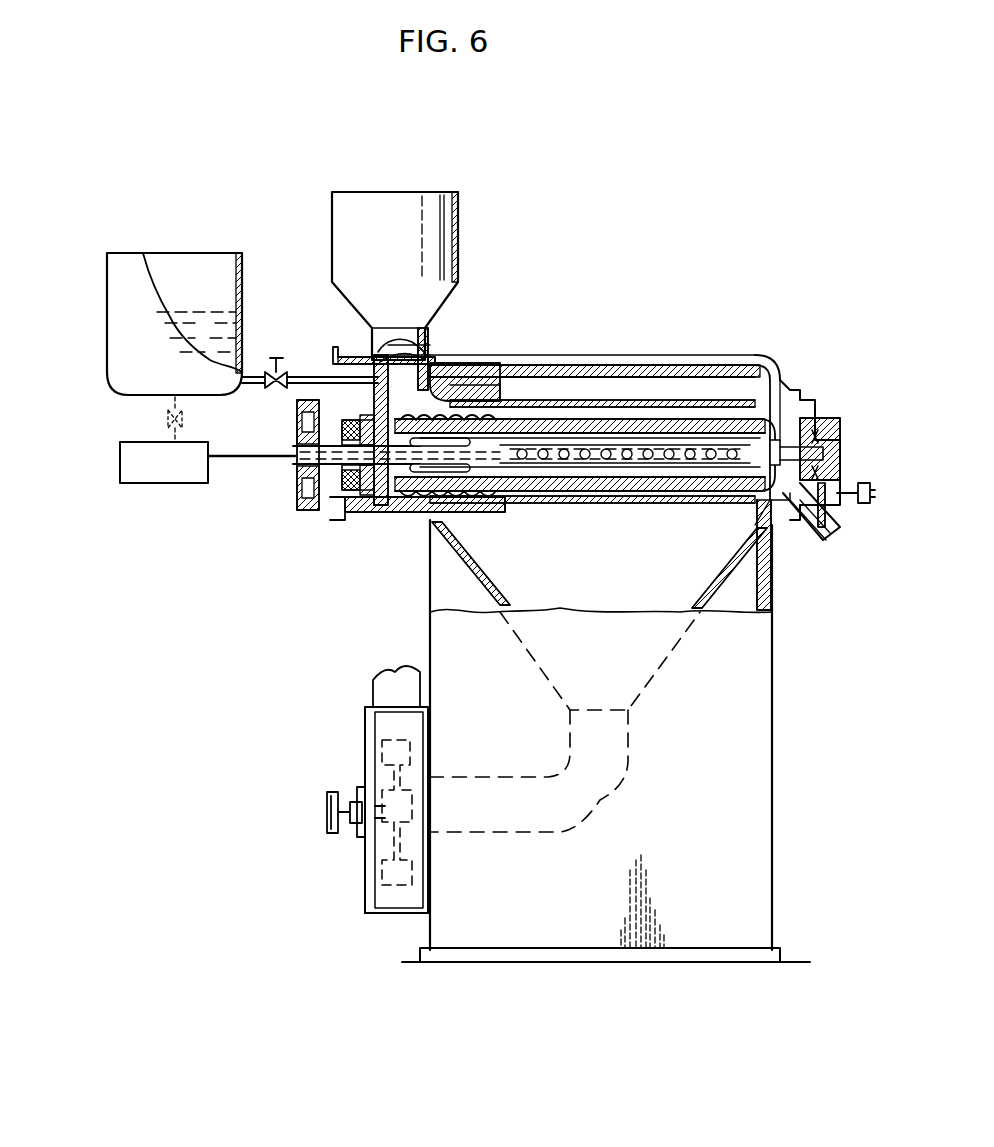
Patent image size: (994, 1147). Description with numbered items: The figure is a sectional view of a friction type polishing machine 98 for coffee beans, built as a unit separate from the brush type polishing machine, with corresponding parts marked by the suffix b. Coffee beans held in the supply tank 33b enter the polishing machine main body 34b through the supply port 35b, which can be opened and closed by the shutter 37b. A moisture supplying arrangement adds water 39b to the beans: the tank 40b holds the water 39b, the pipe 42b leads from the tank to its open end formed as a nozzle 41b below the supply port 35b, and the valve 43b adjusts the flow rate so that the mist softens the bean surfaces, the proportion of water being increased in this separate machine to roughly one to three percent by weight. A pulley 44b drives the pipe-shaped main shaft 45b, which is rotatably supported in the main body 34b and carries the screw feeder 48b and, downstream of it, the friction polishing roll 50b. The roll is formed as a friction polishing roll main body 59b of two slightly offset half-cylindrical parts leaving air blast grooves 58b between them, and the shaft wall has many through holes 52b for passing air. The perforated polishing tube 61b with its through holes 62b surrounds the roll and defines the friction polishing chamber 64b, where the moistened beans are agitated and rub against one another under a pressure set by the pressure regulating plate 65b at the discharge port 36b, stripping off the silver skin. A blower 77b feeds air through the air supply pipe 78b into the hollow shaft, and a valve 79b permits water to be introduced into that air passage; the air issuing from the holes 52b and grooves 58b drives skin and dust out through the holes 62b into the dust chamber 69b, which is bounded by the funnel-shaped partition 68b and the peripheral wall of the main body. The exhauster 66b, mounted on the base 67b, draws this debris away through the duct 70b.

The friction type polishing machine 98 is at (578, 258).
The supply tank 33b is at (392, 202).
The polishing machine main body 34b is at (367, 507).
The supply port 35b is at (418, 345).
The discharge port 36b is at (803, 523).
The shutter 37b is at (335, 347).
The water 39b is at (186, 317).
The tank 40b is at (115, 372).
The nozzle 41b is at (423, 378).
The pipe 42b is at (308, 378).
The valve 43b is at (284, 390).
The pulley 44b is at (297, 503).
The main shaft 45b is at (333, 472).
The screw feeder 48b is at (420, 478).
The friction polishing roll 50b is at (535, 480).
The through holes 52b is at (648, 447).
The air blast grooves 58b is at (692, 427).
The friction polishing roll main body 59b is at (627, 488).
The polishing tube 61b is at (712, 402).
The through holes 62b is at (535, 396).
The friction polishing chamber 64b is at (585, 413).
The pressure regulating plate 65b is at (837, 513).
The exhauster 66b is at (365, 868).
The base 67b is at (455, 920).
The funnel-shaped partition 68b is at (467, 567).
The dust chamber 69b is at (640, 588).
The duct 70b is at (610, 788).
The blower 77b is at (145, 484).
The air supply pipe 78b is at (242, 457).
The valve 79b is at (170, 418).